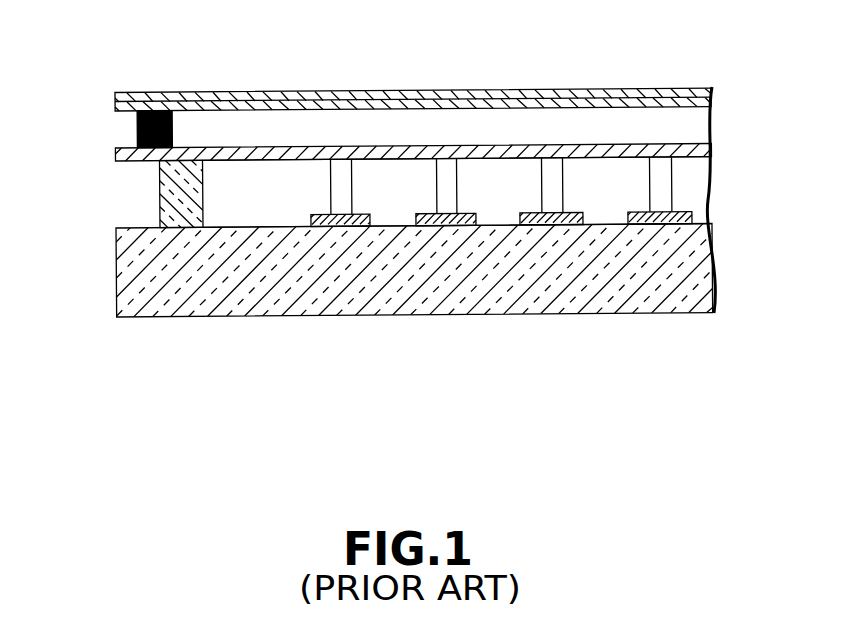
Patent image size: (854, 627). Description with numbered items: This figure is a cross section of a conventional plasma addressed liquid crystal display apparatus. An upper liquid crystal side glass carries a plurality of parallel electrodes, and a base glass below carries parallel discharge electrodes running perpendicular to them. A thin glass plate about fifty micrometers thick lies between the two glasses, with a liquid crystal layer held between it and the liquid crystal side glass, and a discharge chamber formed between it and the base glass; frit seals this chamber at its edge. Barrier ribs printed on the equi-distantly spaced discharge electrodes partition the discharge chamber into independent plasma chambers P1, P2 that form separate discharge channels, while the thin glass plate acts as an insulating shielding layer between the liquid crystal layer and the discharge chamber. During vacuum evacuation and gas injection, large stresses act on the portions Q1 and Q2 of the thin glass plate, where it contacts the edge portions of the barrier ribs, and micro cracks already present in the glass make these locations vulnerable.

The stressed portion of thin glass plate Q1 is at (350, 159).
The stressed portion of thin glass plate Q2 is at (434, 159).
The plasma chamber P1 is at (395, 207).
The plasma chamber P2 is at (503, 195).